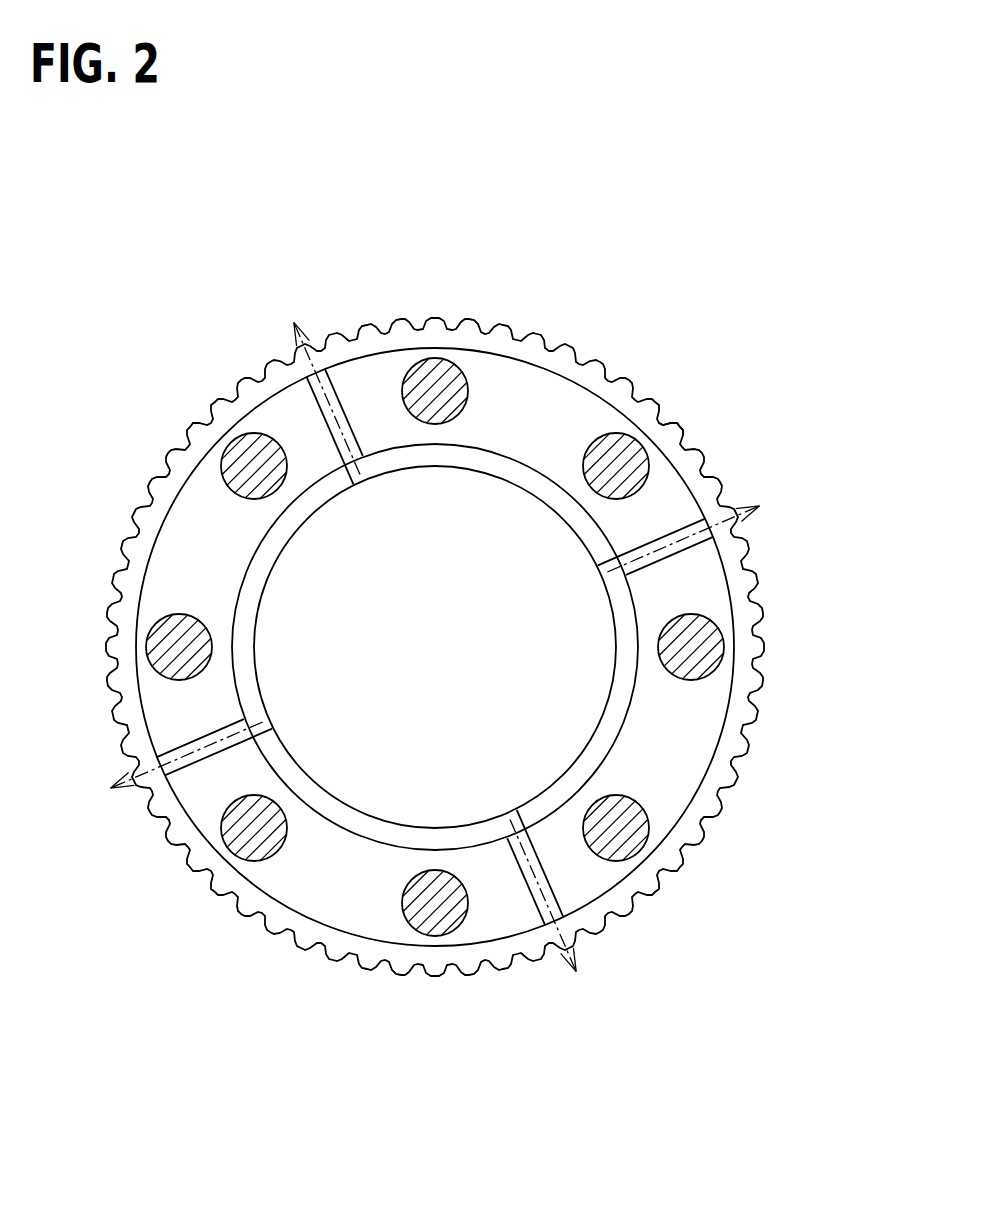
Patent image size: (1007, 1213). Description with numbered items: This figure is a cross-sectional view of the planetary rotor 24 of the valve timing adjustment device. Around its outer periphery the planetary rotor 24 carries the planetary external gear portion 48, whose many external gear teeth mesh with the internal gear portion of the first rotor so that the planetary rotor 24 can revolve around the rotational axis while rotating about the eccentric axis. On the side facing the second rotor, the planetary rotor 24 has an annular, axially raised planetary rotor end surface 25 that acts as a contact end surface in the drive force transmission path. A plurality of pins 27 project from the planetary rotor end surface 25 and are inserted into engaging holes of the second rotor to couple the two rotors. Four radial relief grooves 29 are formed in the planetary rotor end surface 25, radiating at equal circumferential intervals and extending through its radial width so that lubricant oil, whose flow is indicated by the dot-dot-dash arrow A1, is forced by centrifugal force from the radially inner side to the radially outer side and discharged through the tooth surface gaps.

The planetary rotor 24 is at (583, 358).
The planetary external gear portion 48 is at (675, 425).
The planetary rotor end surface 25 is at (688, 735).
The pins 27 is at (439, 372).
The radial relief grooves 29 is at (708, 528).
The dot-dot-dash arrow A1 is at (683, 540).